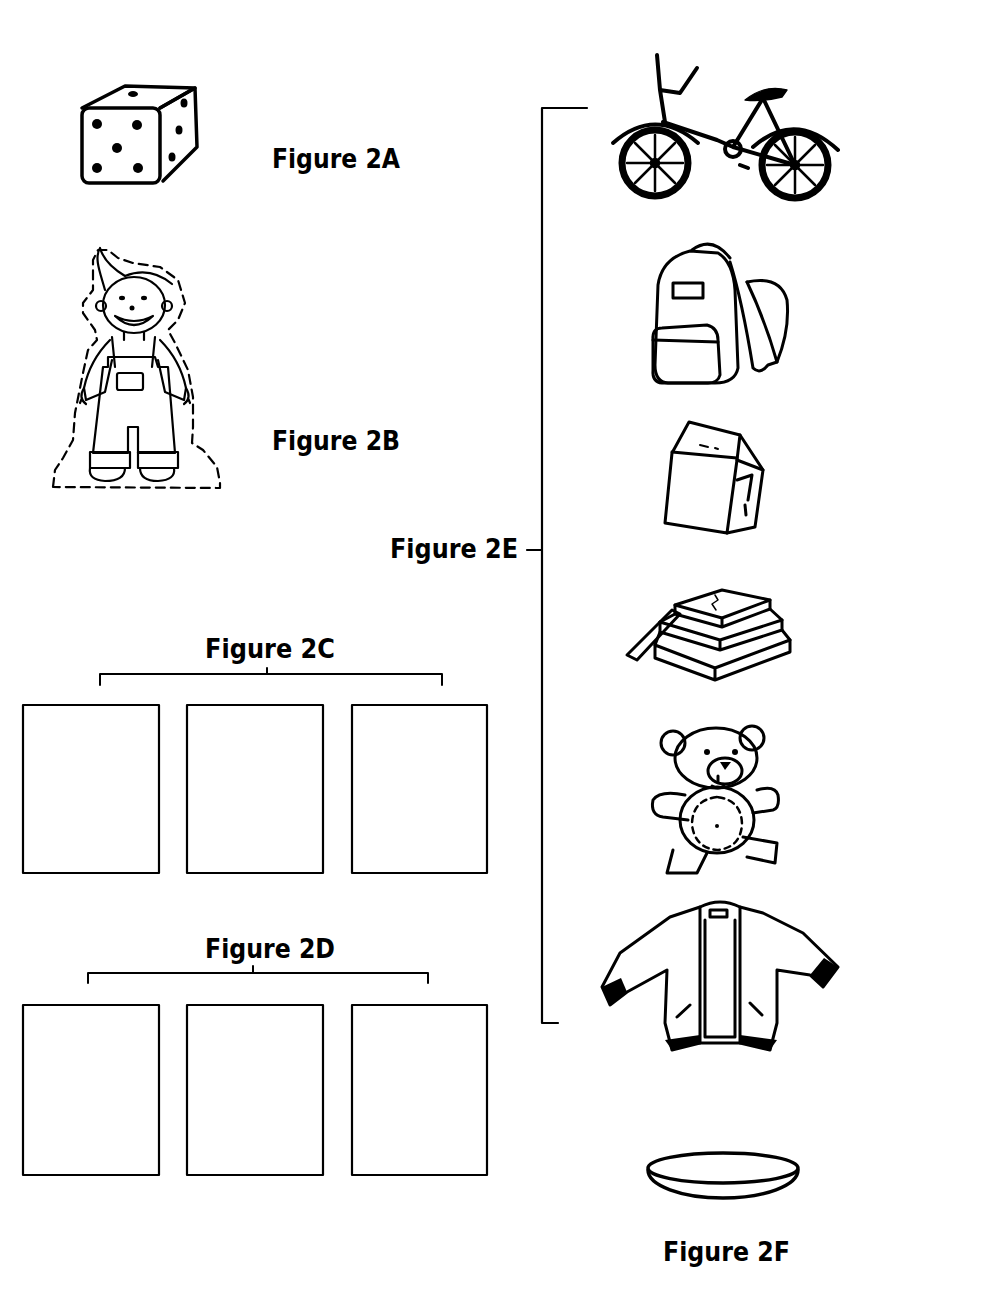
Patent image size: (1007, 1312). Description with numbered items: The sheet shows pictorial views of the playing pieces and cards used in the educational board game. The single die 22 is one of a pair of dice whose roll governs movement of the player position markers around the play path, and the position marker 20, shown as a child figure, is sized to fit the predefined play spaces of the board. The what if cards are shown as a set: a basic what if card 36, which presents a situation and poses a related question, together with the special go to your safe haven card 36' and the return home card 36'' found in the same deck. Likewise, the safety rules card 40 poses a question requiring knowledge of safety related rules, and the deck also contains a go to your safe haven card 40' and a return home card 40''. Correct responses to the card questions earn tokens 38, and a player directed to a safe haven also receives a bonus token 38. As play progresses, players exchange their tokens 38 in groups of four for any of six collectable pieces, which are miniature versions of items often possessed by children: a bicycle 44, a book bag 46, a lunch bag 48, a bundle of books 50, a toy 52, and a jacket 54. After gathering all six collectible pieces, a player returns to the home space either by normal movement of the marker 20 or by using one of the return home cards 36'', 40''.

In FIG. 2A, the dice 22 is at (203, 102).
In FIG. 2B, the position marker 20 is at (198, 308).
In FIG. 2C, the what if card 36 is at (91, 811).
In FIG. 2C, the return home card 36'' is at (255, 811).
In FIG. 2C, the go to your safe haven card 36' is at (419, 811).
In FIG. 2D, the safety rules card 40 is at (91, 1111).
In FIG. 2D, the return home card 40'' is at (255, 1111).
In FIG. 2D, the go to your safe haven card 40' is at (419, 1111).
In FIG. 2E, the bicycle 44 is at (835, 79).
In FIG. 2E, the book bag 46 is at (833, 264).
In FIG. 2E, the lunch bag 48 is at (833, 432).
In FIG. 2E, the bundle of books 50 is at (835, 577).
In FIG. 2E, the toy 52 is at (833, 750).
In FIG. 2E, the jacket 54 is at (835, 919).
In FIG. 2F, the token 38 is at (800, 1159).